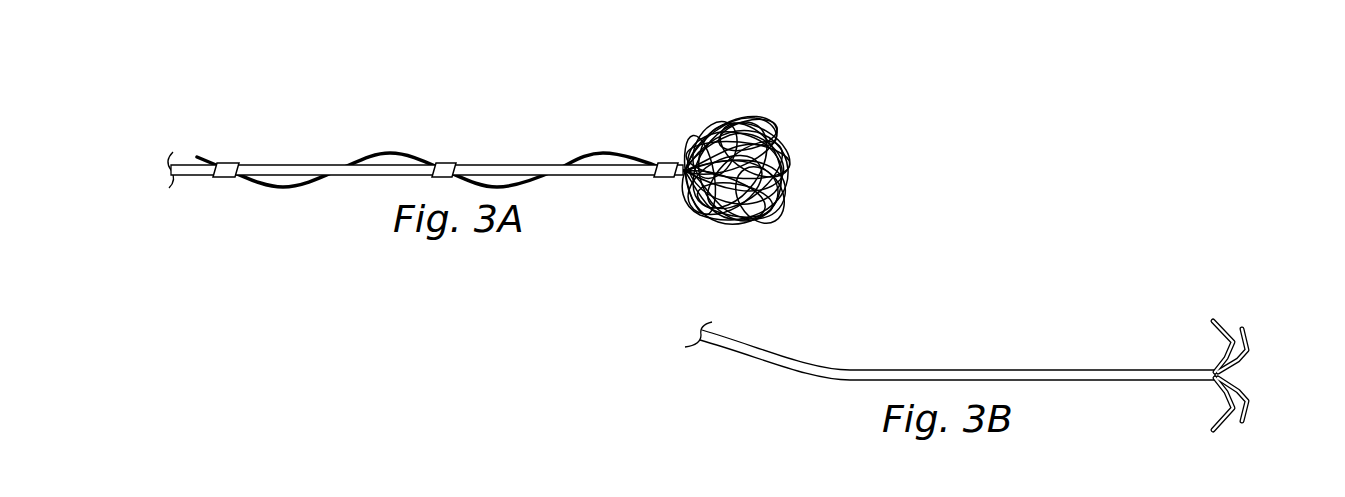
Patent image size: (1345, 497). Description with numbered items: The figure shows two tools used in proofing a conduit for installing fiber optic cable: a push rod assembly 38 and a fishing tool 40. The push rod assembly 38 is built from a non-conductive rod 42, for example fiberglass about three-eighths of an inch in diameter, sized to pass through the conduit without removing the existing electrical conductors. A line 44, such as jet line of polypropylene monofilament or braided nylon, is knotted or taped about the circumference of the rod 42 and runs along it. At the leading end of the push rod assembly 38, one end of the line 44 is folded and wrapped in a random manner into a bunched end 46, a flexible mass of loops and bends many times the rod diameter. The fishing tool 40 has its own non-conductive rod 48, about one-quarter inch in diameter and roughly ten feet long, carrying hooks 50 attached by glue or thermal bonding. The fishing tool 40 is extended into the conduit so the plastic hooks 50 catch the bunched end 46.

In FIG. 3A, the push rod assembly 38 is at (408, 89).
In FIG. 3A, the rod 42 is at (295, 165).
In FIG. 3A, the line 44 is at (390, 153).
In FIG. 3A, the bunched end 46 is at (740, 102).
In FIG. 3B, the fishing tool 40 is at (1116, 313).
In FIG. 3B, the rod 48 is at (872, 370).
In FIG. 3B, the hooks 50 is at (1223, 323).